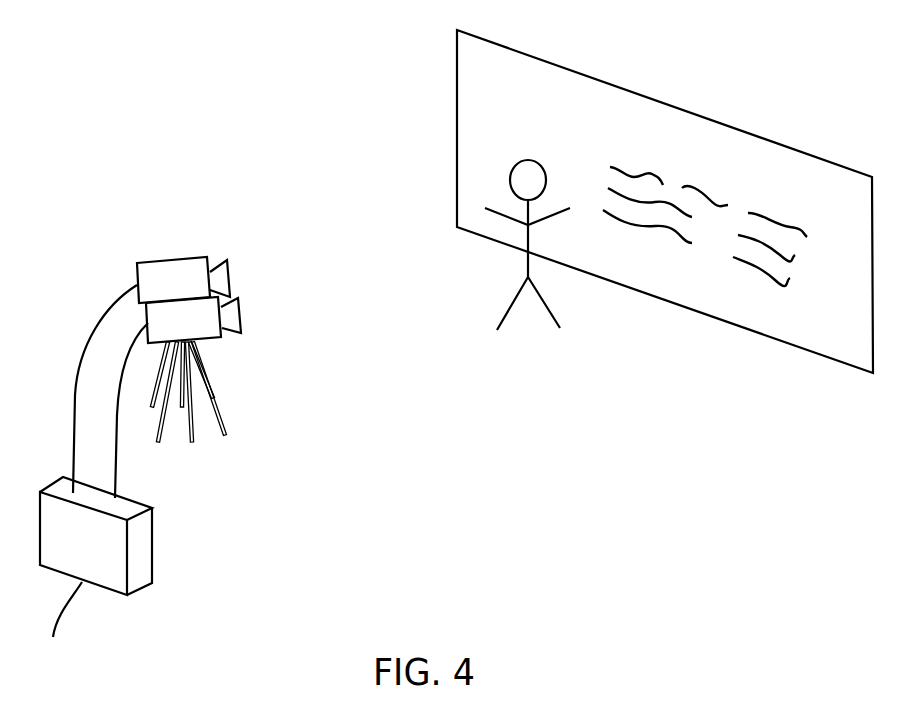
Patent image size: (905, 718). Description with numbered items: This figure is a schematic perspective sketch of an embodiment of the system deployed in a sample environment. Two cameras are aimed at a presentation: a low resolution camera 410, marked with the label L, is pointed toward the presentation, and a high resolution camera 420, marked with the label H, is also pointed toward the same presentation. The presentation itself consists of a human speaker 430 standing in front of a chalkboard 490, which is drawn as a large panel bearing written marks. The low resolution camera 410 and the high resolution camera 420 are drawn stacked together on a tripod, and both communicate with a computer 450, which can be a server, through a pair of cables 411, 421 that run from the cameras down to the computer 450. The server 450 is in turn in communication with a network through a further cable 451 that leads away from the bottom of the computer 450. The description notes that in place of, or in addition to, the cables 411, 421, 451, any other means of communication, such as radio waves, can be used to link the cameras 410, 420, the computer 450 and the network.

The low resolution camera 410 is at (183, 252).
The high resolution camera 420 is at (210, 343).
The visible light camera label L is at (188, 257).
The infrared (heat) camera label H is at (210, 343).
The cable 411 is at (80, 378).
The cable 421 is at (115, 427).
The computer 450 is at (103, 543).
The cable 451 is at (68, 602).
The human speaker 430 is at (521, 233).
The chalkboard 490 is at (787, 185).